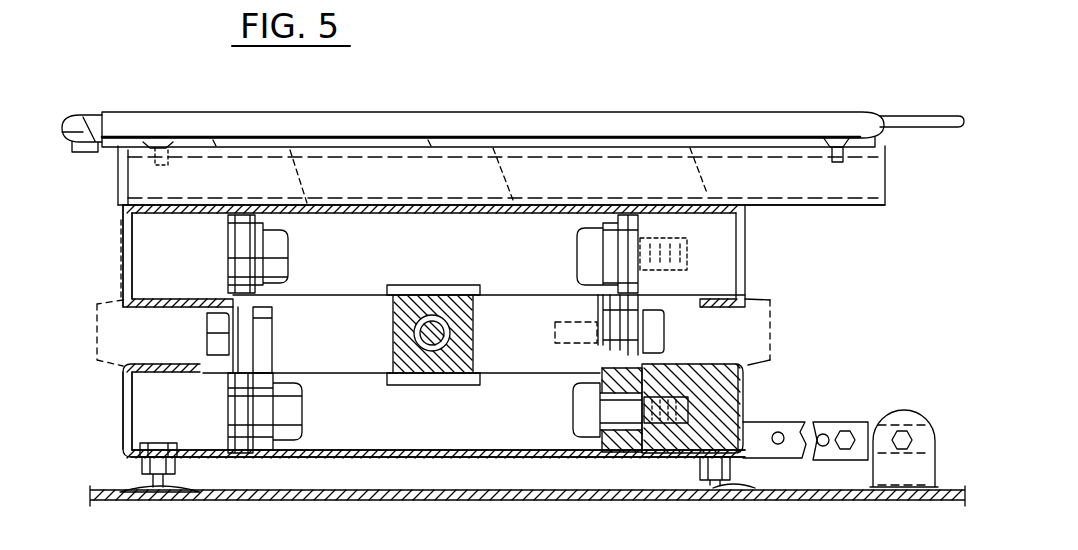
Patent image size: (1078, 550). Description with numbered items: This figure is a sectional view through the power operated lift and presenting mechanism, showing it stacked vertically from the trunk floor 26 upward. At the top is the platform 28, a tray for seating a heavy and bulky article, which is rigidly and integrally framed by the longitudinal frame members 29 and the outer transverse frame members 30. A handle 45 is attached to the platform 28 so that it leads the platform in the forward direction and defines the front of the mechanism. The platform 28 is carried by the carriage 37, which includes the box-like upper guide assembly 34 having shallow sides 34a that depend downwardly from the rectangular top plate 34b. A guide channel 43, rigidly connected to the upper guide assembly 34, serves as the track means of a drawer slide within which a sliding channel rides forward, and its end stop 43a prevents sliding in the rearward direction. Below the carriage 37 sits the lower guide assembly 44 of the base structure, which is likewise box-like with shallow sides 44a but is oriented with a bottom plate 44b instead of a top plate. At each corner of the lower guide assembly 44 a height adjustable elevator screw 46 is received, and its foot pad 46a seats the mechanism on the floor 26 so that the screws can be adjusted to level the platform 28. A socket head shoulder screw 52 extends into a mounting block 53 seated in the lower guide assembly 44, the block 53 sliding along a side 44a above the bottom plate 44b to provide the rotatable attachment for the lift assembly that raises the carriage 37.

The floor 26 is at (238, 494).
The platform 28 is at (592, 102).
The longitudinal frame members 29 is at (90, 120).
The outer transverse frame members 30 is at (372, 114).
The upper guide assembly 34 is at (756, 252).
The shallow sides 34a is at (122, 240).
The top plate 34b is at (512, 210).
The carriage 37 is at (910, 206).
The guide channel 43 is at (880, 142).
The end stop 43a is at (125, 186).
The lower guide assembly 44 is at (114, 435).
The shallow sides 44a is at (124, 398).
The bottom plate 44b is at (418, 460).
The handle 45 is at (925, 120).
The elevator screw 46 is at (705, 487).
The foot pad 46a is at (722, 490).
The socket head shoulder screw 52 is at (585, 415).
The mounting block 53 is at (215, 407).